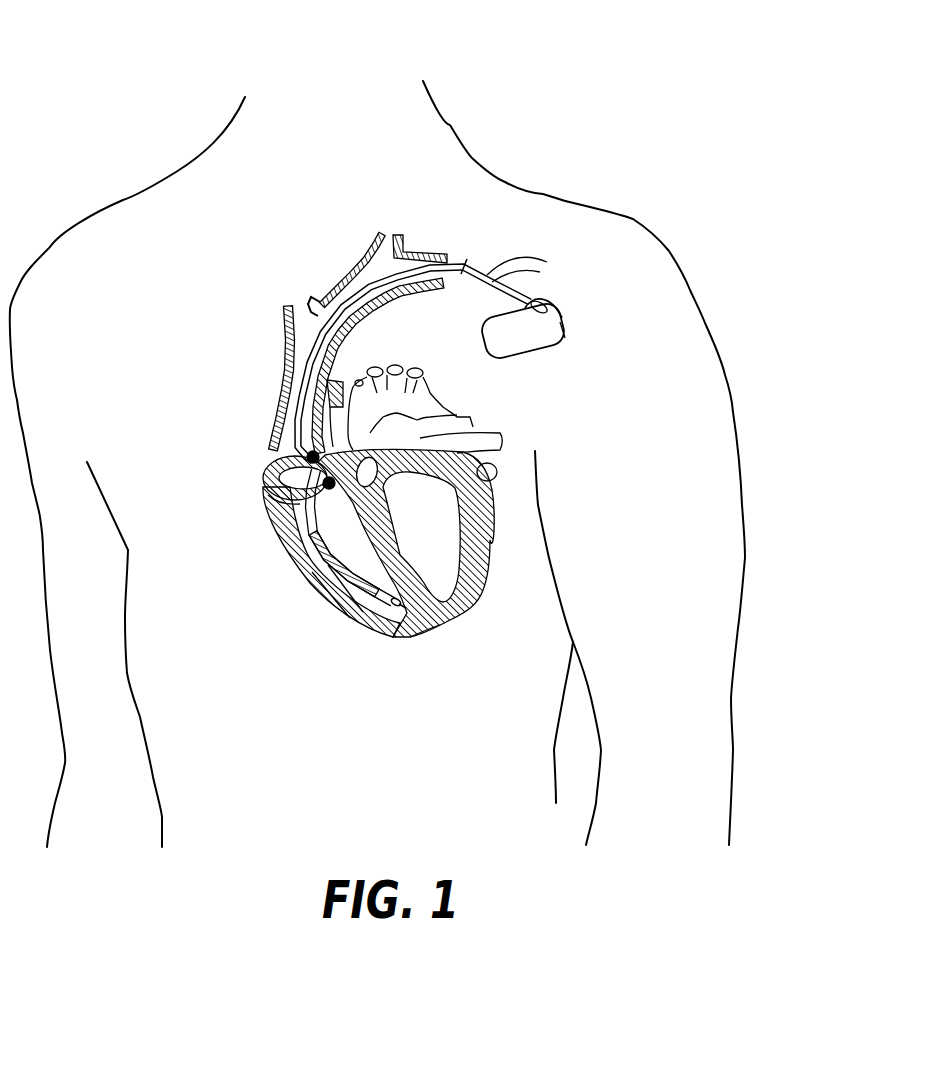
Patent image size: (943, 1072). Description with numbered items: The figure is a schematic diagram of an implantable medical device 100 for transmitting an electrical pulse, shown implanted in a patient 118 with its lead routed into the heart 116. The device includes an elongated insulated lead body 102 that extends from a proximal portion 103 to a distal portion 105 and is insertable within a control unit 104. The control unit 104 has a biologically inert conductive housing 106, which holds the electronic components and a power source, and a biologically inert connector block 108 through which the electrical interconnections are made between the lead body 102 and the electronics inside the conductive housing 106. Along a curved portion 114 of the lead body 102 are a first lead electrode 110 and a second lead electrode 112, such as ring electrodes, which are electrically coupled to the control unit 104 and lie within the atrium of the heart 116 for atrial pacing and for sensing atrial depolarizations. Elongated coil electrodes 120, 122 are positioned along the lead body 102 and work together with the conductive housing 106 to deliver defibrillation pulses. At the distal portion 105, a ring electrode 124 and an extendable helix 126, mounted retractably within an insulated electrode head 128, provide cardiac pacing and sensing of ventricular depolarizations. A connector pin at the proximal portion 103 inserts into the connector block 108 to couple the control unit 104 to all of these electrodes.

The implantable medical device 100 is at (561, 125).
The elongated insulated lead body 102 is at (390, 267).
The proximal portion 103 is at (551, 286).
The control unit 104 is at (527, 363).
The distal portion 105 is at (378, 573).
The conductive housing 106 is at (562, 327).
The connector block 108 is at (557, 313).
The first lead electrode 110 is at (290, 460).
The second lead electrode 112 is at (273, 500).
The curved portion 114 is at (262, 477).
The heart 116 is at (500, 606).
The patient 118 is at (633, 219).
The elongated coil electrode 120 is at (330, 582).
The elongated coil electrode 122 is at (319, 337).
The ring electrode 124 is at (370, 600).
The extendable helix 126 is at (430, 627).
The insulated electrode head 128 is at (398, 612).